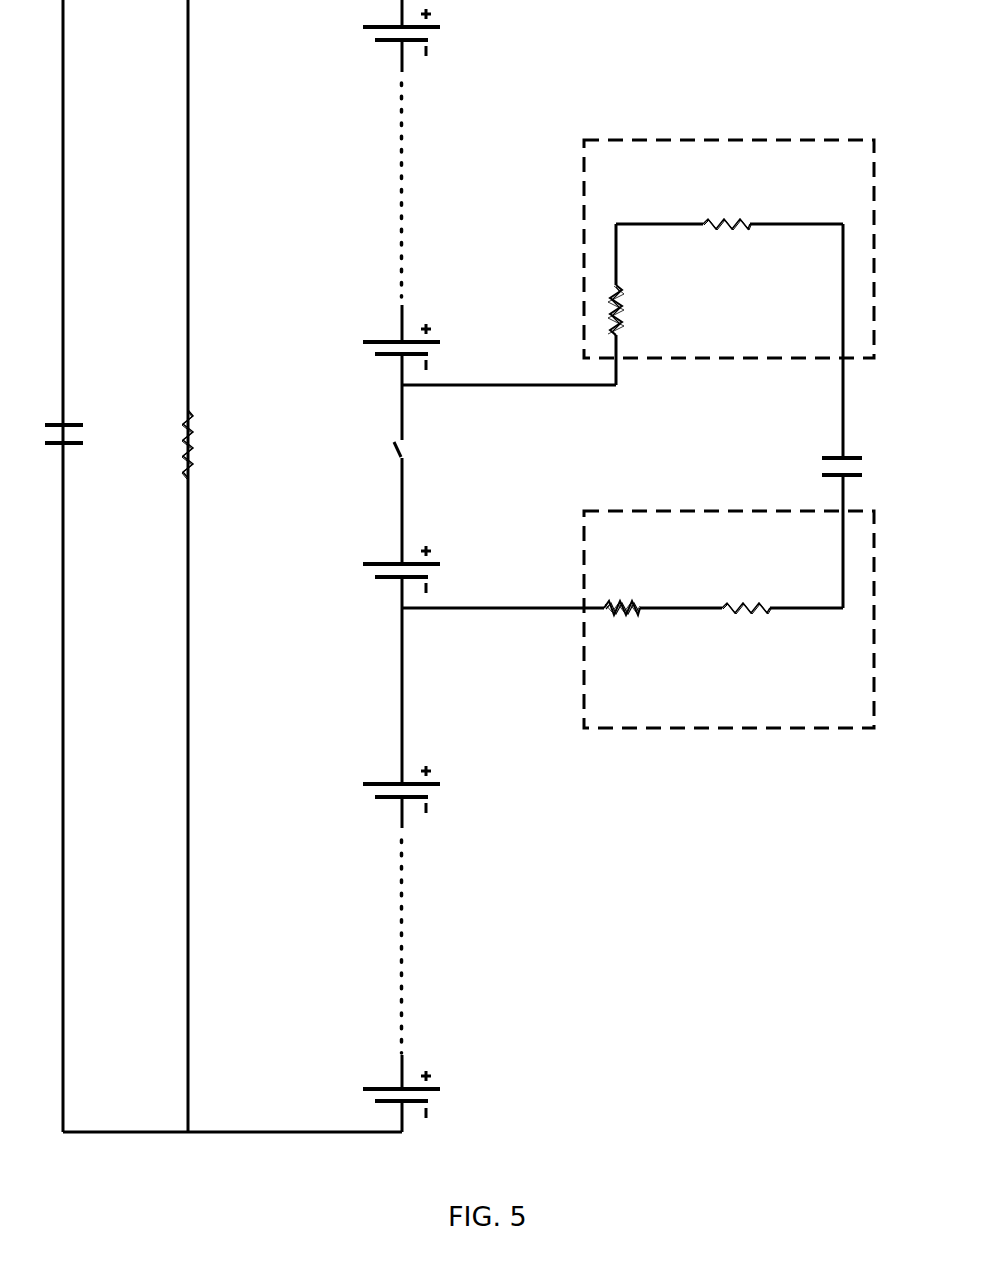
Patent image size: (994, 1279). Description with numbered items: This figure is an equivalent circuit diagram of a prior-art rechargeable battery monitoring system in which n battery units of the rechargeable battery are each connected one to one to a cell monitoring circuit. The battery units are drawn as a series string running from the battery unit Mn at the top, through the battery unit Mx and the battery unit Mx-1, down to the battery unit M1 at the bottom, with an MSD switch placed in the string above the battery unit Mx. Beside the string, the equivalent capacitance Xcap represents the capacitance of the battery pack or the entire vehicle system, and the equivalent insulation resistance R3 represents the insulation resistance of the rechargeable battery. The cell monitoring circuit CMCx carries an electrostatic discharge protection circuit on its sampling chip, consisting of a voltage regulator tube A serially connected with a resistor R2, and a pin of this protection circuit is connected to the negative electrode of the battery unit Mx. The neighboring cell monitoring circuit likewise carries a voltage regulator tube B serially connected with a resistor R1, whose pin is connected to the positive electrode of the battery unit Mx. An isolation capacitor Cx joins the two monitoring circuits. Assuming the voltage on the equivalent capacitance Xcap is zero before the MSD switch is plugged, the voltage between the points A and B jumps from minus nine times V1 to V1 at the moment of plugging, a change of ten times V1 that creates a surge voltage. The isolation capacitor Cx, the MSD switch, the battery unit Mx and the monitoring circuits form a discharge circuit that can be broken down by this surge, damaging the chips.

The equivalent capacitance Xcap is at (90, 438).
The equivalent insulation resistance R3 is at (206, 444).
The battery unit n Mn is at (381, 34).
The MSD switch MSD is at (425, 451).
The battery unit x Mx is at (381, 570).
The battery unit x-1 Mx-1 is at (371, 789).
The battery unit 1 M1 is at (379, 1094).
The resistor R1 is at (727, 244).
The voltage regulator tube B is at (631, 310).
The isolation capacitor Cx is at (861, 470).
The cell monitoring circuit x CMCx is at (729, 619).
The voltage regulator tube A is at (621, 596).
The resistor R2 is at (746, 596).